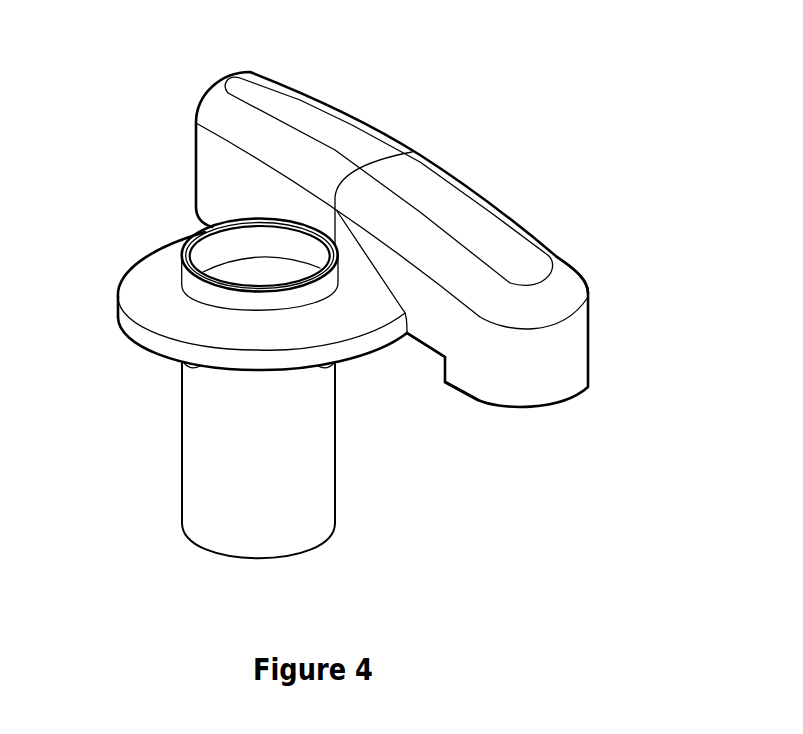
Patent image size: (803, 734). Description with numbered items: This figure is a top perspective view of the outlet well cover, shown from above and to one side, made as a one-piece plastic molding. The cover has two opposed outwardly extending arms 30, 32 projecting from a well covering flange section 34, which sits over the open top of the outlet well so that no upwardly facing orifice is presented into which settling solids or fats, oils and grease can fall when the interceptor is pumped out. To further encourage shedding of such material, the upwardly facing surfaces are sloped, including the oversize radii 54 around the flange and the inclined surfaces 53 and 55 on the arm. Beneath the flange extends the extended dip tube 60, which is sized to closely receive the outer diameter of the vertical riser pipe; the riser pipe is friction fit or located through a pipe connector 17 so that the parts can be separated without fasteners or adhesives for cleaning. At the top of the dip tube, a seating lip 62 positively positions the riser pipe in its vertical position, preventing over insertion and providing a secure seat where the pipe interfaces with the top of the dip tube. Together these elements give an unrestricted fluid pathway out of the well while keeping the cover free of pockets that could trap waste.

The outwardly extending arm 30 is at (293, 110).
The outwardly extending arm 32 is at (513, 267).
The inclined surface 53 is at (553, 263).
The inclined surface 55 is at (510, 307).
The oversize radius 54 is at (163, 307).
The well covering flange section 34 is at (140, 342).
The pipe connector 17 is at (190, 256).
The seating lip 62 is at (217, 257).
The extended dip tube 60 is at (337, 447).